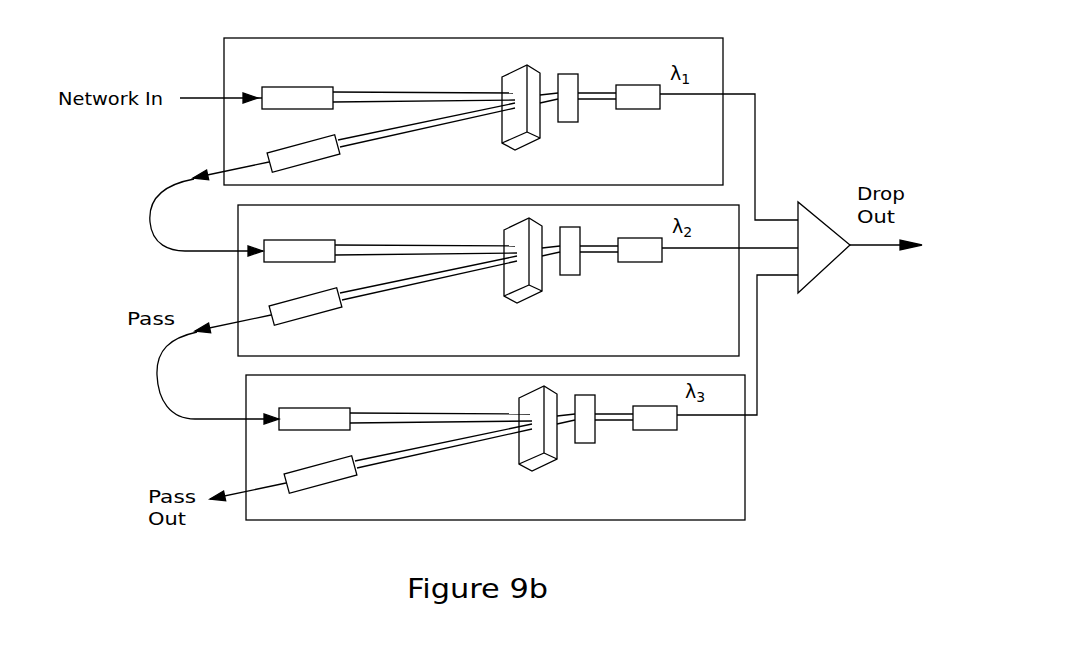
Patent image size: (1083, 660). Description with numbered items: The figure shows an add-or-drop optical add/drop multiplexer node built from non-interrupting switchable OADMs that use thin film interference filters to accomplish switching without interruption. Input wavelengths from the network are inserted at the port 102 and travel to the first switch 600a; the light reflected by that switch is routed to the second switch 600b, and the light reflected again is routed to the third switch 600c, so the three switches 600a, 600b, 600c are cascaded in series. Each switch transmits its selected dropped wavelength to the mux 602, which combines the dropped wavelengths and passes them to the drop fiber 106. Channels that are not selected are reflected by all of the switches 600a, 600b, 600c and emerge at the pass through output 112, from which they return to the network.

The port 102 is at (220, 88).
The thin film interference filter switch 600a is at (473, 111).
The thin film interference filter switch 600b is at (488, 280).
The thin film interference filter switch 600c is at (495, 447).
The mux 602 is at (821, 230).
The drop fiber 106 is at (886, 264).
The pass through output 112 is at (241, 479).